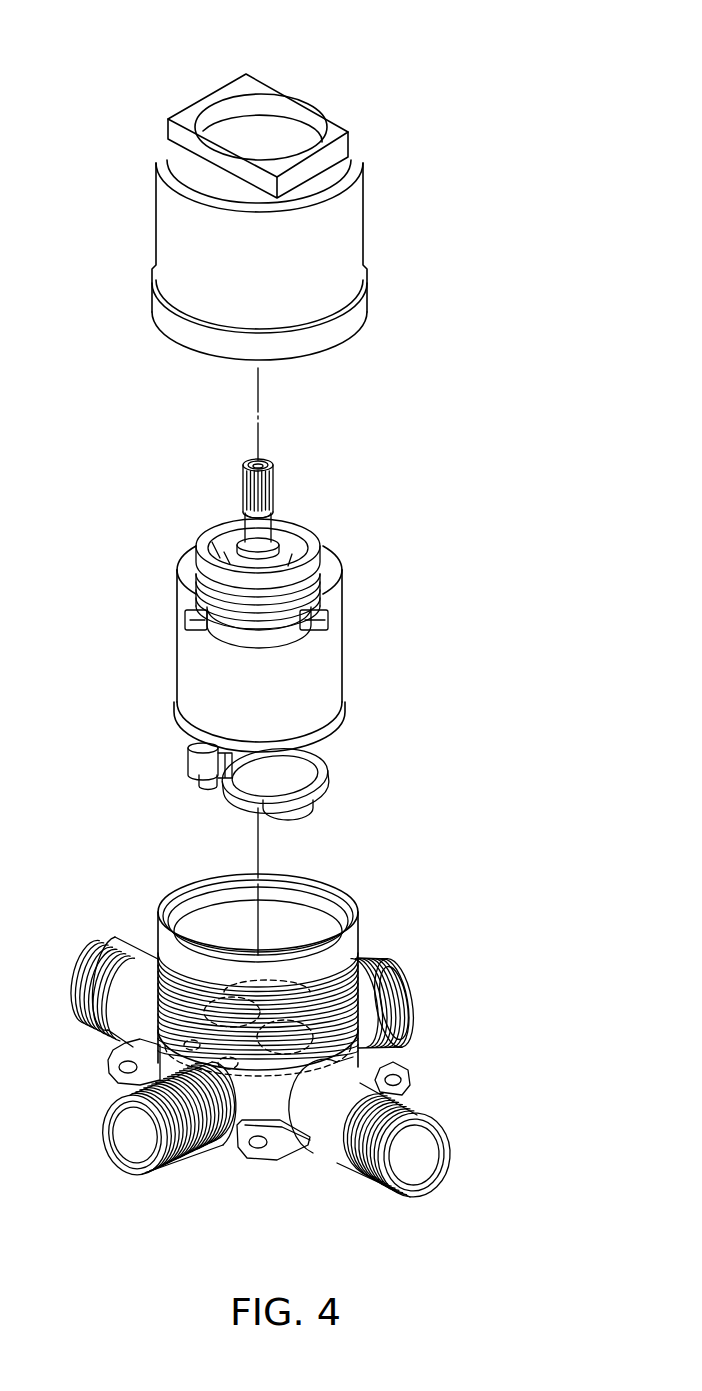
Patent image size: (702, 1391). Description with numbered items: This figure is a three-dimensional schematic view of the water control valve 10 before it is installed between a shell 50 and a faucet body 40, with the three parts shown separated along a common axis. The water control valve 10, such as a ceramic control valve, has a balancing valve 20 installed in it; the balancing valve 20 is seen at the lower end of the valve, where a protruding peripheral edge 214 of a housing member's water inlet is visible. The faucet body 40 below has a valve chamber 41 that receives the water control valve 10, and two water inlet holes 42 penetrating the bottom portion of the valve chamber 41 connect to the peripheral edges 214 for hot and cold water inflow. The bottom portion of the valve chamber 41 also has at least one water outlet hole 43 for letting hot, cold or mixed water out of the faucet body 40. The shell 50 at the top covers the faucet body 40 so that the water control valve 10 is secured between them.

The water control valve 10 is at (301, 504).
The balancing valve 20 is at (244, 806).
The peripheral edge 214 is at (313, 813).
The faucet body 40 is at (309, 1038).
The valve chamber 41 is at (220, 923).
The water inlet holes 42 is at (298, 980).
The water outlet hole 43 is at (110, 1085).
The shell 50 is at (184, 97).